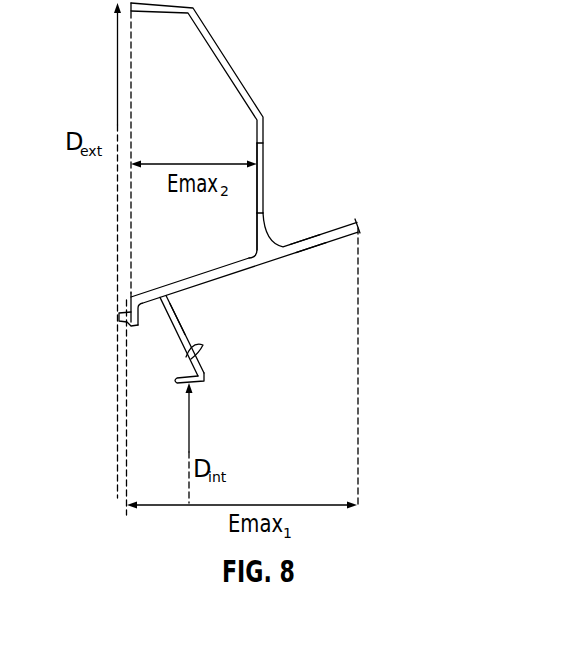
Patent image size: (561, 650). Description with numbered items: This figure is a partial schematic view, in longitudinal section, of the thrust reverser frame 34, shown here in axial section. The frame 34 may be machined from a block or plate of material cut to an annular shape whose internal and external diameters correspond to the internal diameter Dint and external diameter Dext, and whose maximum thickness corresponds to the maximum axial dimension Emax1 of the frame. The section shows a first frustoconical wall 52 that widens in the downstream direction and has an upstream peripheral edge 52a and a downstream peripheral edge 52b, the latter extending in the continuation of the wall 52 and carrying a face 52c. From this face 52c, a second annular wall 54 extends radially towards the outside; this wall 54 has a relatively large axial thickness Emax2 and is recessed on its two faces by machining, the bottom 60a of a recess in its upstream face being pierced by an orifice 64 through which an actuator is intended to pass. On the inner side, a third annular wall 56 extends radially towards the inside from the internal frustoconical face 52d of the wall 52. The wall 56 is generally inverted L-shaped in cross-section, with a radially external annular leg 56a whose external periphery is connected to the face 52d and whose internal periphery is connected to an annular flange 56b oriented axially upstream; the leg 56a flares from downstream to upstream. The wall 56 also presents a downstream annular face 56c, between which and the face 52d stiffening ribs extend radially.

The frame 34 is at (380, 74).
The second annular wall 54 is at (270, 120).
The orifice 64 is at (262, 207).
The bottom of recess 60a is at (257, 243).
The first frustoconical wall 52 is at (234, 280).
The upstream peripheral edge 52a is at (131, 326).
The downstream peripheral edge 52b is at (360, 225).
The face 52c is at (305, 240).
The internal frustoconical face 52d is at (311, 249).
The third annular wall 56 is at (192, 322).
The radially external annular leg 56a is at (178, 318).
The annular flange 56b is at (200, 383).
The downstream annular face 56c is at (183, 357).